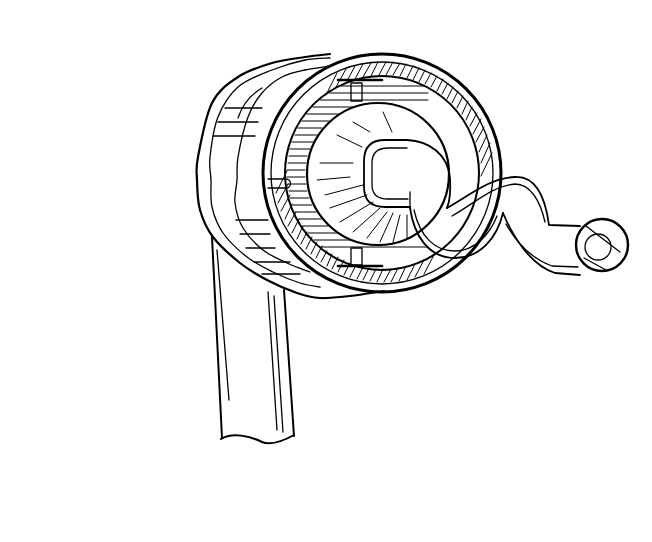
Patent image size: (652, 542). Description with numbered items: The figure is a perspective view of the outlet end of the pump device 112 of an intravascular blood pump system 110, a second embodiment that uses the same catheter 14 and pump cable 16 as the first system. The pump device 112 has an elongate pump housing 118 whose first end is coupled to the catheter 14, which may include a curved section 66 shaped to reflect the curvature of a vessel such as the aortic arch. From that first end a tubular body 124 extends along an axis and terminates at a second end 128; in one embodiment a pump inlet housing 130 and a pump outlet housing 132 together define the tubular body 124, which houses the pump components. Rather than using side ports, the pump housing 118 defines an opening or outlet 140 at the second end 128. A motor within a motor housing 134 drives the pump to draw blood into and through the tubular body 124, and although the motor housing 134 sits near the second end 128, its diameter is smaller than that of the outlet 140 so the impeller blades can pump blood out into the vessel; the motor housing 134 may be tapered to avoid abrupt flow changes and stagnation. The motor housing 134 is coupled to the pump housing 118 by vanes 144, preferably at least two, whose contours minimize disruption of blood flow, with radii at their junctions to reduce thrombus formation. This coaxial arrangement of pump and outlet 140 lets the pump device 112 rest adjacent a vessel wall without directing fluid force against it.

The intravascular blood pump system 110 is at (78, 158).
The pump device 112 is at (237, 63).
The pump housing 118 is at (207, 130).
The tubular body 124 is at (248, 101).
The second end 128 is at (483, 108).
The pump inlet housing 130 is at (217, 189).
The pump outlet housing 132 is at (245, 155).
The motor housing 134 is at (417, 120).
The outlet 140 is at (480, 149).
The vanes 144 is at (383, 80).
The catheter 14 is at (197, 375).
The pump cable 16 is at (552, 202).
The curved section 66 is at (292, 372).